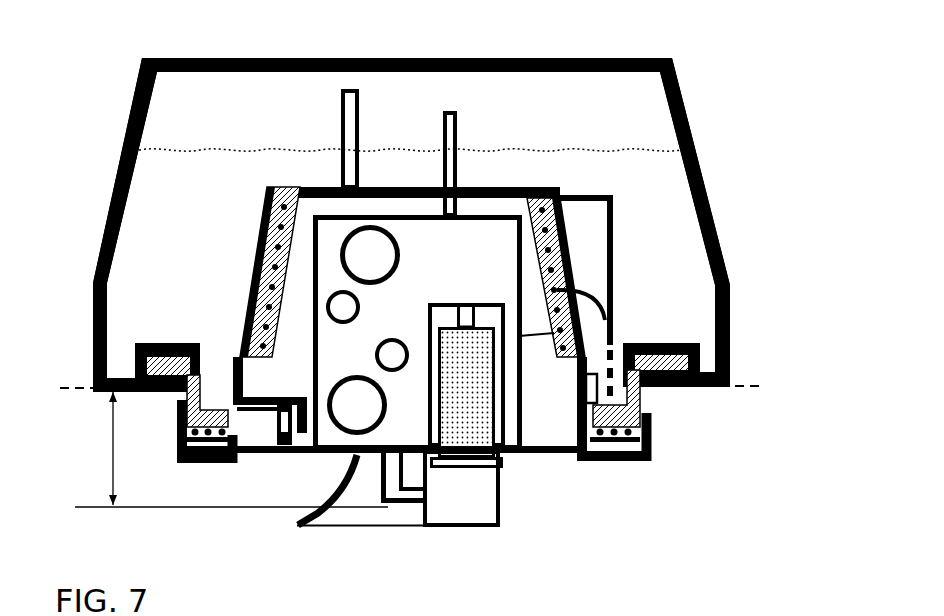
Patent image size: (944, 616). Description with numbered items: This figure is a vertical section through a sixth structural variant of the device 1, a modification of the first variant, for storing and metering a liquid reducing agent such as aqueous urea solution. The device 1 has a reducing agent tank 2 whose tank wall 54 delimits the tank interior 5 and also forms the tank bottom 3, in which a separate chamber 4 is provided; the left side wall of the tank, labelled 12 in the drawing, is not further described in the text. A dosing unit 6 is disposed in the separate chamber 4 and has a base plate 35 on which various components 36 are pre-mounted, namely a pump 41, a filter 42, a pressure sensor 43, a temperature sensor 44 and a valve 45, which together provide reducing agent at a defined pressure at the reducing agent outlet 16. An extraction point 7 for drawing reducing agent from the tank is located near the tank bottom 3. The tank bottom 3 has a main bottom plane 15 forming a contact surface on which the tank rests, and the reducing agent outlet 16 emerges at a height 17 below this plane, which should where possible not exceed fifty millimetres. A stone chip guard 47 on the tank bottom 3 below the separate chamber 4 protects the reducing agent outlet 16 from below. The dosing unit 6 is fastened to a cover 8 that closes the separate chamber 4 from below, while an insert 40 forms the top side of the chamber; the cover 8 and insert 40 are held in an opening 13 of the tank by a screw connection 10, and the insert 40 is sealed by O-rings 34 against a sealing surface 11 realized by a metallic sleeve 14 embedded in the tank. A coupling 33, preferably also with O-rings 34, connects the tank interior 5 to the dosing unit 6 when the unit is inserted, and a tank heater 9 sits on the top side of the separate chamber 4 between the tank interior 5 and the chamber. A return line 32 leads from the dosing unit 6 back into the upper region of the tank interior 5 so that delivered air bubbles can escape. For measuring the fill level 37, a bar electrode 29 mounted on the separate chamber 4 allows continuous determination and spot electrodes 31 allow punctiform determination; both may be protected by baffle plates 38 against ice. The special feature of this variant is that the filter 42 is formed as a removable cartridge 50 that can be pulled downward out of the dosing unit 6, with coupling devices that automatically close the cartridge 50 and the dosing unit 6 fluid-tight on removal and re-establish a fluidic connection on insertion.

The device 1 is at (742, 110).
The reducing agent tank 2 is at (733, 322).
The tank bottom 3 is at (713, 392).
The separate chamber 4 is at (515, 187).
The tank interior 5 is at (255, 102).
The dosing unit 6 is at (606, 285).
The extraction point 7 is at (232, 394).
The cover 8 is at (515, 455).
The tank heater 9 is at (548, 192).
The screw connection 10 is at (653, 413).
The sealing surface 11 is at (648, 450).
The housing left wall 12 is at (128, 130).
The opening 13 is at (237, 445).
The metallic sleeve 14 is at (183, 403).
The main bottom plane 15 is at (72, 386).
The reducing agent outlet 16 is at (425, 505).
The height 17 is at (113, 470).
The bar electrode 29 is at (340, 128).
The spot electrode 31 is at (597, 374).
The return line 32 is at (443, 122).
The coupling 33 is at (293, 440).
The O-rings 34 is at (352, 455).
The base plate 35 is at (522, 365).
The components 36 is at (357, 376).
The fill level 37 is at (168, 158).
The baffle plate 38 is at (605, 283).
The insert 40 is at (482, 187).
The pump 41 is at (383, 505).
The filter 42 is at (488, 435).
The pressure sensor 43 is at (398, 340).
The temperature sensor 44 is at (255, 272).
The valve 45 is at (350, 225).
The stone chip guard 47 is at (318, 528).
The cartridge 50 is at (500, 500).
The tank wall 54 is at (708, 190).